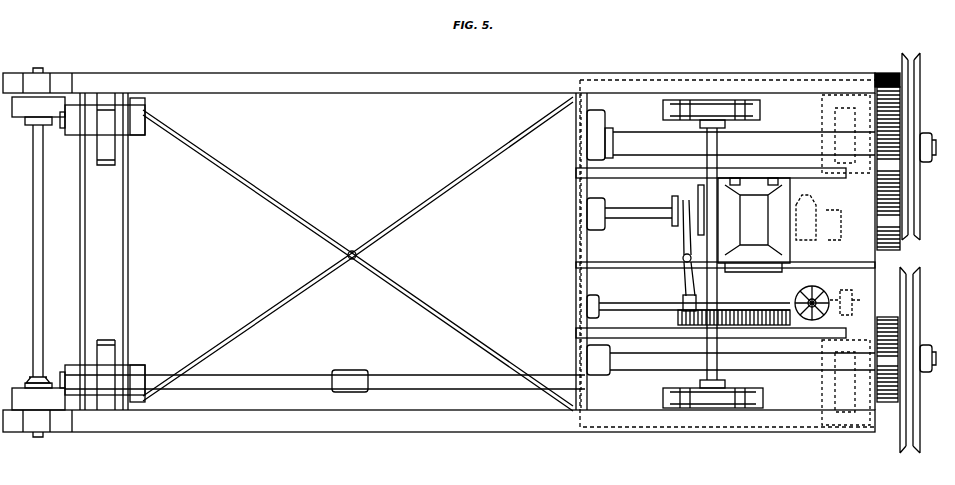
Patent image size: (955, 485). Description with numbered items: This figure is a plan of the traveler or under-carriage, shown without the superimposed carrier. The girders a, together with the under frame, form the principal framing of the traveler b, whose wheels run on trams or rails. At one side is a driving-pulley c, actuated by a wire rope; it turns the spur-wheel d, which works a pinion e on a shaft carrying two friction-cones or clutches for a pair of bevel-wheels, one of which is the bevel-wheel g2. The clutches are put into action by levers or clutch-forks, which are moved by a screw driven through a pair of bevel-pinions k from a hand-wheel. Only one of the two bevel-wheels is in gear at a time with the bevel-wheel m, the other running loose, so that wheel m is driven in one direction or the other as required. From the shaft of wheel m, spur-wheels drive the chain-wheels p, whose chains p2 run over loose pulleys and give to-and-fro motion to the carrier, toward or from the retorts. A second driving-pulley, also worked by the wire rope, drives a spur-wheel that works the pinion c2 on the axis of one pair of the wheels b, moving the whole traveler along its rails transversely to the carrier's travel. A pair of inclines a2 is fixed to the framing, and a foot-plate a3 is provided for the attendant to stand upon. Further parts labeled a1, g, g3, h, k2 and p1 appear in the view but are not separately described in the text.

The girders a is at (439, 252).
The diagonal braces a1 is at (470, 254).
The pair of inclines a2 is at (722, 251).
The foot-plate a3 is at (620, 242).
The traveler wheels b is at (465, 259).
The driving-pulley c is at (767, 253).
The pinion c2 is at (887, 359).
The spur-wheel d is at (888, 168).
The pinion e is at (887, 151).
The lower shaft g is at (383, 295).
The bevel-wheel g2 is at (739, 186).
The guide lug g3 is at (778, 187).
The stop h is at (845, 302).
The bevel-pinions k is at (750, 255).
The cam k2 is at (818, 214).
The bevel-wheel m is at (754, 225).
The chain-wheels p is at (713, 254).
The left post upper block p1 is at (38, 240).
The chains p2 is at (38, 396).